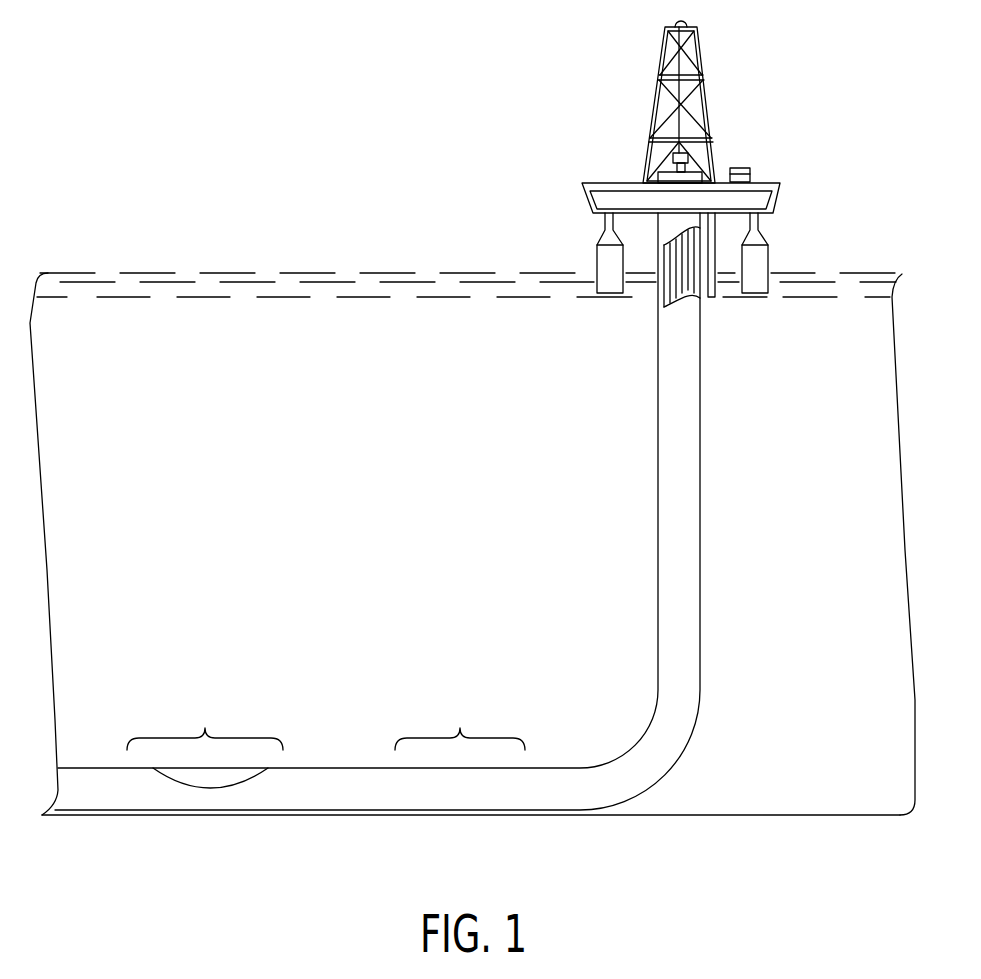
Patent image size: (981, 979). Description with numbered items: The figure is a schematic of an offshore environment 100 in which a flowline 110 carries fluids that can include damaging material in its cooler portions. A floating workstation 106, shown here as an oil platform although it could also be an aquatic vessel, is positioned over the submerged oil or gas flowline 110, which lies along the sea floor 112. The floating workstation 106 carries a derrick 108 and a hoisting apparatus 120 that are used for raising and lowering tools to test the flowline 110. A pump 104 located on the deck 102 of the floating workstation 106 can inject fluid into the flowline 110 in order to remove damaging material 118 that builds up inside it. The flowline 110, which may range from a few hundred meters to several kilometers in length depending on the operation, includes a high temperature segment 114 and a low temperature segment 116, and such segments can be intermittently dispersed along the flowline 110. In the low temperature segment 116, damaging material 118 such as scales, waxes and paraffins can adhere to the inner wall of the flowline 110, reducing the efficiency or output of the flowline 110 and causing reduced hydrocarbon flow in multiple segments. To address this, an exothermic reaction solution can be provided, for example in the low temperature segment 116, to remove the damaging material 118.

The offshore environment 100 is at (250, 96).
The deck 102 is at (582, 203).
The pump 104 is at (748, 177).
The floating workstation 106 is at (762, 258).
The derrick 108 is at (702, 70).
The flowline 110 is at (658, 483).
The sea floor 112 is at (772, 815).
The high temperature segment 114 is at (460, 719).
The low temperature segment 116 is at (205, 719).
The damaging material 118 is at (213, 782).
The hoisting apparatus 120 is at (688, 157).